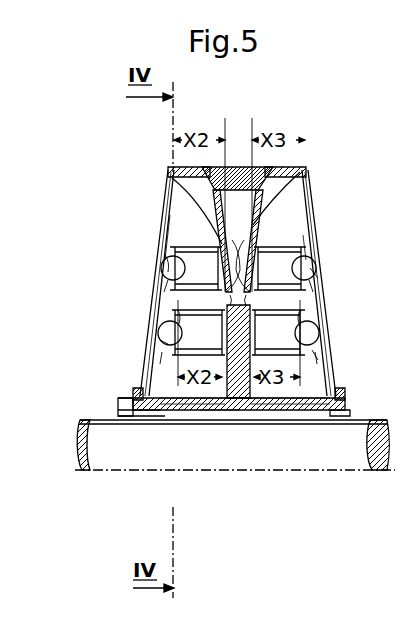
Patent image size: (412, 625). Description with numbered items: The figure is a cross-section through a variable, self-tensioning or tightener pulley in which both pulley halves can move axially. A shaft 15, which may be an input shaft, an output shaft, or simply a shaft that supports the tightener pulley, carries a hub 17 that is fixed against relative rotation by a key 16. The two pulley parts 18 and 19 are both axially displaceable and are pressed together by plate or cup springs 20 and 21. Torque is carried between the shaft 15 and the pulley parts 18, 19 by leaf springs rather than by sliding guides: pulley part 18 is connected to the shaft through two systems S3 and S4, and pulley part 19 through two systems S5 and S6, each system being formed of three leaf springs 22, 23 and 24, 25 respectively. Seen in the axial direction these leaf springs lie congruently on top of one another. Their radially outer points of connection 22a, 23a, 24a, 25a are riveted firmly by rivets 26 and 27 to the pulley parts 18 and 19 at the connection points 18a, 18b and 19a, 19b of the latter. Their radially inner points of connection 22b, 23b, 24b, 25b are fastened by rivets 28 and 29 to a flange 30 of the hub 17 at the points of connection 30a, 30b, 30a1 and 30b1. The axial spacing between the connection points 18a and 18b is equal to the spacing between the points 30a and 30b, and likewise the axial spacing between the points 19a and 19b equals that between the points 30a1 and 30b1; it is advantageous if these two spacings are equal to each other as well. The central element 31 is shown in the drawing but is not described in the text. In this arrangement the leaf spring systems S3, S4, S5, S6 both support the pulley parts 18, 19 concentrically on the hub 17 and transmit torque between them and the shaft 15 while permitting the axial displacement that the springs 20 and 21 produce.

The shaft 15 is at (116, 460).
The key 16 is at (125, 412).
The hub 17 is at (128, 398).
The pulley part 18 is at (180, 168).
The connection point 18a is at (168, 225).
The connection point 18b is at (170, 200).
The pulley part 19 is at (297, 168).
The connection point 19a is at (285, 238).
The connection point 19b is at (303, 252).
The plate or cup spring 20 is at (168, 212).
The plate or cup spring 21 is at (305, 172).
The leaf spring 22 is at (175, 288).
The outer point of connection 22a is at (170, 262).
The inner point of connection 22b is at (165, 315).
The leaf spring 23 is at (227, 393).
The outer point of connection 23a is at (175, 176).
The inner point of connection 23b is at (198, 332).
The leaf spring 24 is at (280, 268).
The outer point of connection 24a is at (300, 190).
The inner point of connection 24b is at (278, 332).
The leaf spring 25 is at (305, 297).
The outer point of connection 25a is at (308, 262).
The inner point of connection 25b is at (305, 335).
The rivet 26 is at (172, 268).
The rivet 27 is at (312, 280).
The rivet 28 is at (162, 340).
The rivet 29 is at (310, 355).
The flange 30 is at (240, 414).
The point of connection 30a is at (185, 405).
The point of connection 30a1 is at (247, 399).
The point of connection 30b is at (240, 398).
The point of connection 30b1 is at (290, 398).
The top center block 31 is at (240, 165).
The leaf spring system S3 is at (172, 318).
The leaf spring system S4 is at (213, 278).
The leaf spring system S5 is at (262, 278).
The leaf spring system S6 is at (308, 340).